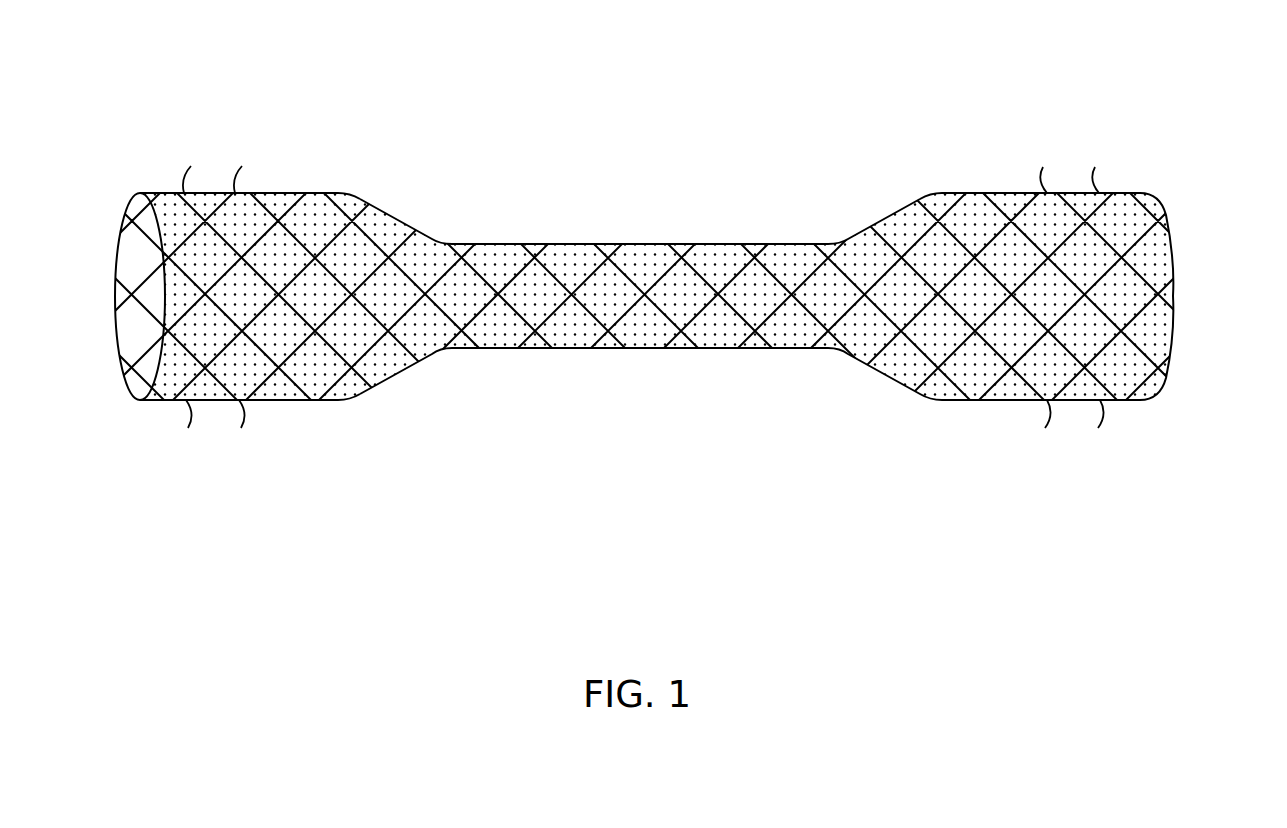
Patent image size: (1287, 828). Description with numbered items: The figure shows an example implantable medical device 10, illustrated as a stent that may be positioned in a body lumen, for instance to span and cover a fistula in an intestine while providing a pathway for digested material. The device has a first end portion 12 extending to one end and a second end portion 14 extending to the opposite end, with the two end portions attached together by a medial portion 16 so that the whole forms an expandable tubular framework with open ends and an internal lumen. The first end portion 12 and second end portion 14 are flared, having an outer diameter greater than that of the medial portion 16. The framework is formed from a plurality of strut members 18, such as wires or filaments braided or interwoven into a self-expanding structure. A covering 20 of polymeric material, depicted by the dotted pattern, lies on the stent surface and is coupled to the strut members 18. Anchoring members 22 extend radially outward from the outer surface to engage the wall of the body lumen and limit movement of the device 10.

The implantable medical device 10 is at (894, 108).
The first end portion 12 is at (292, 402).
The second end portion 14 is at (1002, 402).
The medial portion 16 is at (842, 367).
The strut members 18 is at (1140, 240).
The covering 20 is at (423, 260).
The anchoring members 22 is at (184, 183).